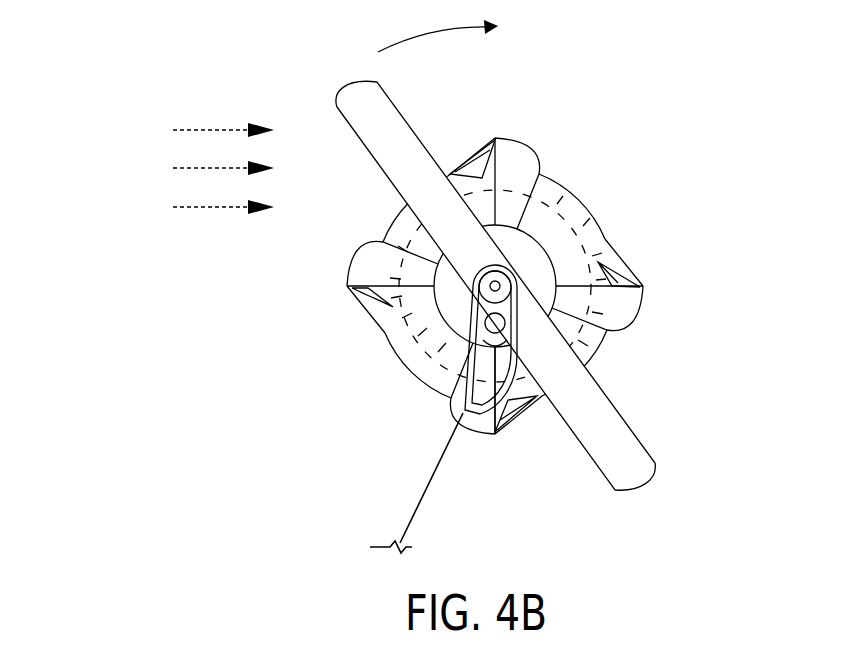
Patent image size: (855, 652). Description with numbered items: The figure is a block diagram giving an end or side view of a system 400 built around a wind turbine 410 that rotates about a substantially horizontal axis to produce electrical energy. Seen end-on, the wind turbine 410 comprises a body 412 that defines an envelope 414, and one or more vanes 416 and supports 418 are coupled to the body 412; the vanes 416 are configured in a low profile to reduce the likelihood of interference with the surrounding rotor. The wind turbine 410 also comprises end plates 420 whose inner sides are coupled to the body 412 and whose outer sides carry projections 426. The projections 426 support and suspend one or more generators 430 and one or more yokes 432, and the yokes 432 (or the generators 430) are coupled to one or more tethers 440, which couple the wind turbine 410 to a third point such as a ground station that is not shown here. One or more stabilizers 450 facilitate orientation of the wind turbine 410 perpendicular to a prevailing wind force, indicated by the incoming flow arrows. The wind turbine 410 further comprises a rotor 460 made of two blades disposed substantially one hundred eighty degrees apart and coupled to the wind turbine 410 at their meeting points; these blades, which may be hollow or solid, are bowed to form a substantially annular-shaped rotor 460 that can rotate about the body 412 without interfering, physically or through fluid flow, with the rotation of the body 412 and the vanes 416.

The system 400 is at (110, 58).
The wind turbine 410 is at (517, 301).
The body 412 is at (612, 258).
The envelope 414 is at (590, 222).
The vanes 416 is at (503, 138).
The supports 418 is at (478, 172).
The end plates 420 is at (455, 395).
The projections 426 is at (548, 225).
The generators 430 is at (522, 365).
The yokes 432 is at (460, 405).
The tethers 440 is at (422, 497).
The stabilizers 450 is at (410, 322).
The rotor 460 is at (640, 445).